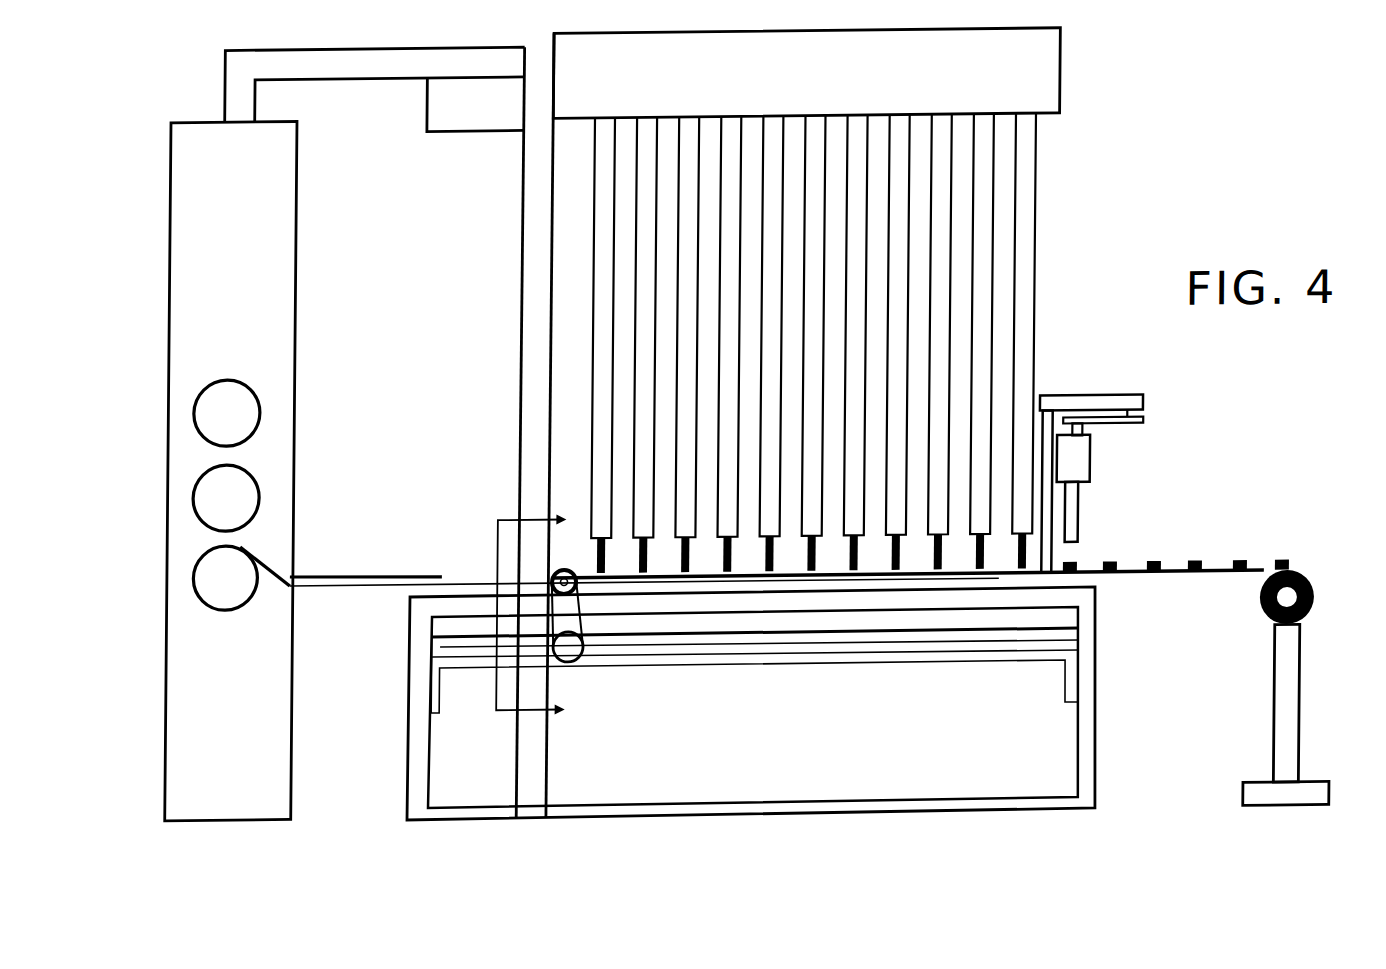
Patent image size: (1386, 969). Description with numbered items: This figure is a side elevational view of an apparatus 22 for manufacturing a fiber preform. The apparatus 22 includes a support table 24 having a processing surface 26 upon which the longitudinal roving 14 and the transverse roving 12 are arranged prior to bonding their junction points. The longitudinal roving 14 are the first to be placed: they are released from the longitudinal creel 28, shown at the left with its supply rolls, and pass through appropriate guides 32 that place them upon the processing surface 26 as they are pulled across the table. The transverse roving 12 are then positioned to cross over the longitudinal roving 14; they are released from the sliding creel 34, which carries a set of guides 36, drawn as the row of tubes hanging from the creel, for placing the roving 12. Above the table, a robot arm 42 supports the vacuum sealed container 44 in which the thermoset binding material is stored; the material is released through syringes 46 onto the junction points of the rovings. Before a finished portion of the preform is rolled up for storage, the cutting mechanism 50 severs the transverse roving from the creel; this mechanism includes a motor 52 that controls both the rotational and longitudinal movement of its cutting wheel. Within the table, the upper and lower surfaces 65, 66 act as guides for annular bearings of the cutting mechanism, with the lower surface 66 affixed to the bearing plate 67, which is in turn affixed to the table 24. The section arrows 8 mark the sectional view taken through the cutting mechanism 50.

The section line 8 is at (541, 615).
The transverse roving 12 is at (692, 556).
The longitudinal roving 14 is at (949, 556).
The apparatus 22 is at (1181, 138).
The support table 24 is at (1088, 752).
The processing surface 26 is at (1073, 582).
The longitudinal creel 28 is at (237, 596).
The guides 32 is at (334, 574).
The sliding creel 34 is at (736, 88).
The guides 36 is at (600, 221).
The robot arm 42 is at (1074, 401).
The vacuum sealed container 44 is at (1082, 460).
The syringes 46 is at (1075, 527).
The cutting mechanism 50 is at (582, 681).
The motor 52 is at (576, 659).
The upper surface 65 is at (814, 639).
The lower surface 66 is at (952, 650).
The bearing plate 67 is at (802, 659).